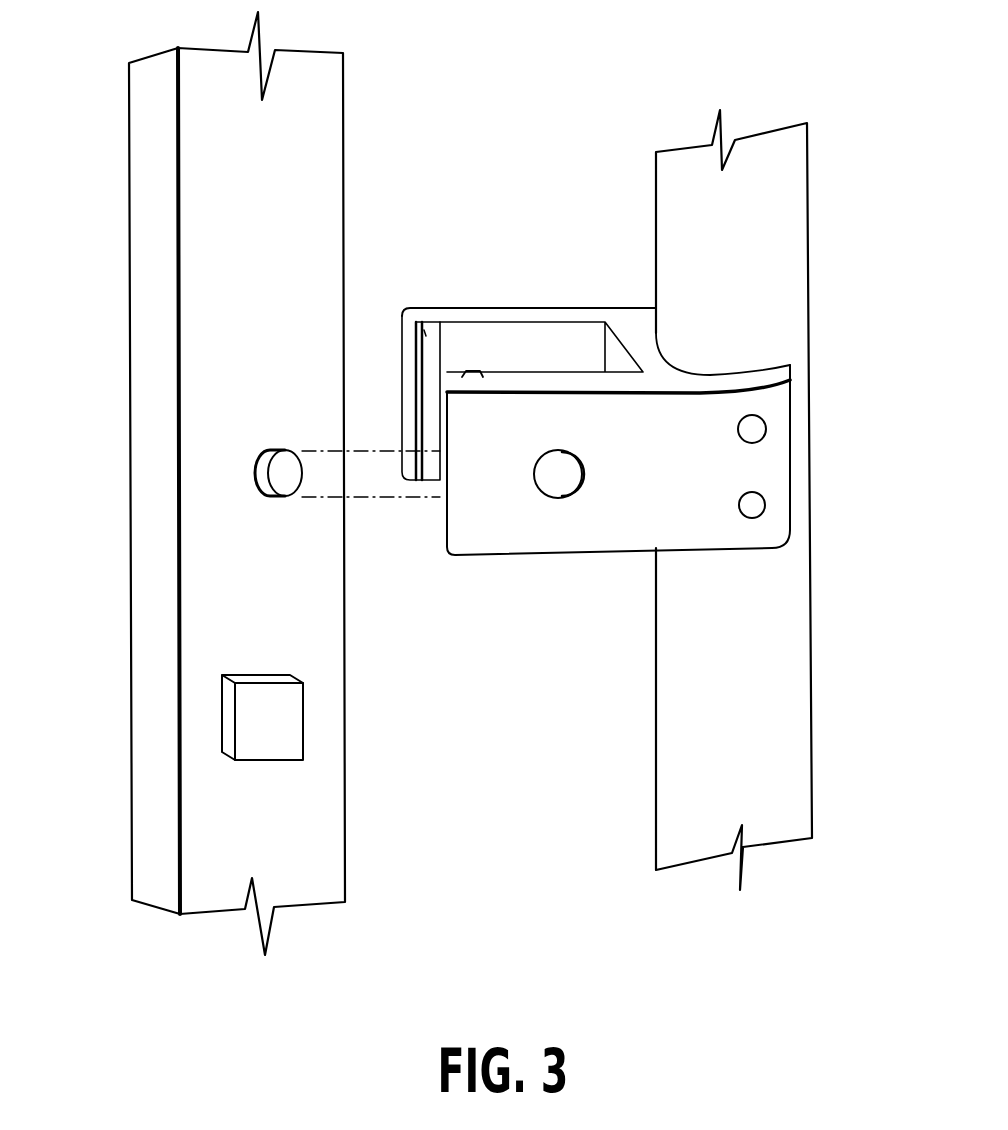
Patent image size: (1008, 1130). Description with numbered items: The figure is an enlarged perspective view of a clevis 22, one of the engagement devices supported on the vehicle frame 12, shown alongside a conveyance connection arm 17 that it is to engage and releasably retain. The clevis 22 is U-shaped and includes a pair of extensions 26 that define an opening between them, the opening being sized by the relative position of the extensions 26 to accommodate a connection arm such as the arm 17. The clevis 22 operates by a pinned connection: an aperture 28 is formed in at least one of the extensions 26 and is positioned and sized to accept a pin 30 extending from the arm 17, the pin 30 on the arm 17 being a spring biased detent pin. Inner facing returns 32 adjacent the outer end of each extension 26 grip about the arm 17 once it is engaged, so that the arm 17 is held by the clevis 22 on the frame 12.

The vehicle frame 12 is at (773, 630).
The connection arm 17 is at (160, 712).
The clevis 22 is at (573, 411).
The extension 26 is at (480, 308).
The aperture 28 is at (546, 477).
The pin 30 is at (284, 474).
The inner facing return 32 is at (425, 330).